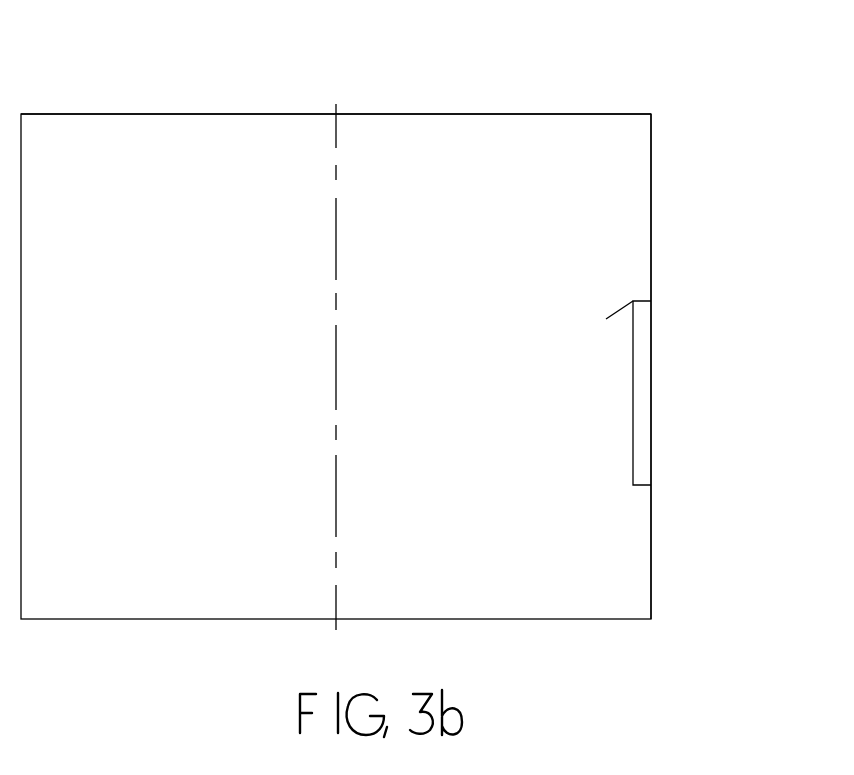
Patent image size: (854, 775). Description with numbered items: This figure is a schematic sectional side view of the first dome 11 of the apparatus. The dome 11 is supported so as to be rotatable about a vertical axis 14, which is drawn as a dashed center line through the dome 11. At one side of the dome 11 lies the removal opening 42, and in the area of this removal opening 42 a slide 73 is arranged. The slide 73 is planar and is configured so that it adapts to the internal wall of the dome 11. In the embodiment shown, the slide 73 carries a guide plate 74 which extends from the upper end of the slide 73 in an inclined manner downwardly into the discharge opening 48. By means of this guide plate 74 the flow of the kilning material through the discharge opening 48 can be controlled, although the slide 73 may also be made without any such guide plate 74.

The dome 11 is at (651, 150).
The discharge opening 48 is at (153, 141).
The removal opening 42 is at (651, 222).
The vertical axis 14 is at (336, 137).
The slide 73 is at (652, 408).
The guide plate 74 is at (622, 325).